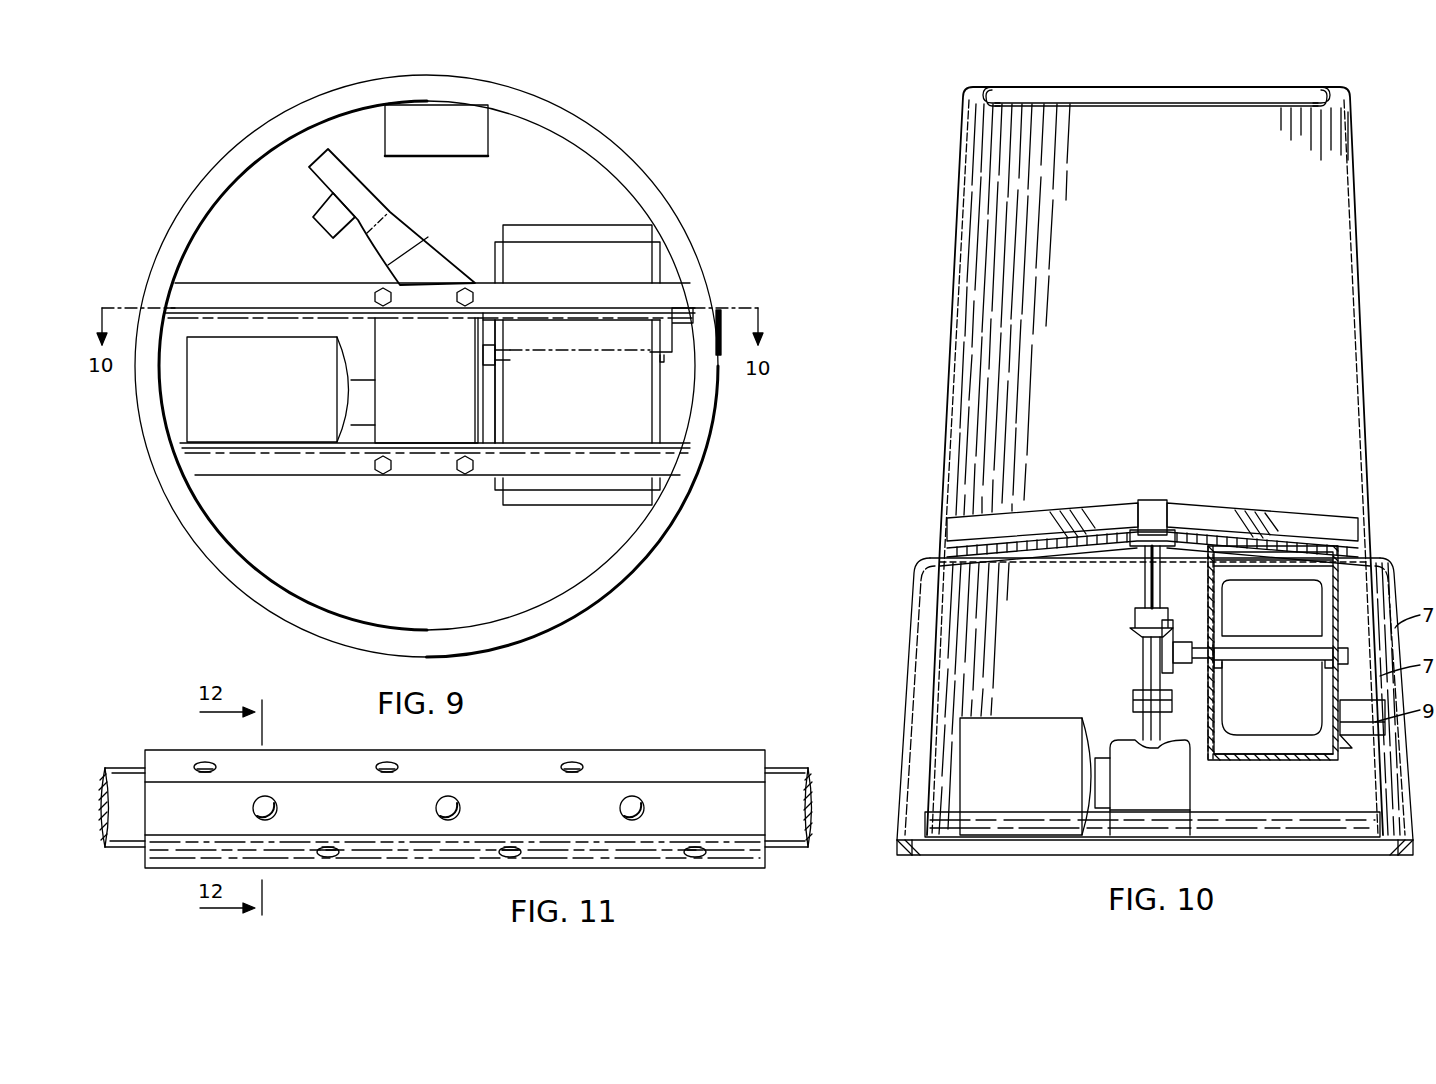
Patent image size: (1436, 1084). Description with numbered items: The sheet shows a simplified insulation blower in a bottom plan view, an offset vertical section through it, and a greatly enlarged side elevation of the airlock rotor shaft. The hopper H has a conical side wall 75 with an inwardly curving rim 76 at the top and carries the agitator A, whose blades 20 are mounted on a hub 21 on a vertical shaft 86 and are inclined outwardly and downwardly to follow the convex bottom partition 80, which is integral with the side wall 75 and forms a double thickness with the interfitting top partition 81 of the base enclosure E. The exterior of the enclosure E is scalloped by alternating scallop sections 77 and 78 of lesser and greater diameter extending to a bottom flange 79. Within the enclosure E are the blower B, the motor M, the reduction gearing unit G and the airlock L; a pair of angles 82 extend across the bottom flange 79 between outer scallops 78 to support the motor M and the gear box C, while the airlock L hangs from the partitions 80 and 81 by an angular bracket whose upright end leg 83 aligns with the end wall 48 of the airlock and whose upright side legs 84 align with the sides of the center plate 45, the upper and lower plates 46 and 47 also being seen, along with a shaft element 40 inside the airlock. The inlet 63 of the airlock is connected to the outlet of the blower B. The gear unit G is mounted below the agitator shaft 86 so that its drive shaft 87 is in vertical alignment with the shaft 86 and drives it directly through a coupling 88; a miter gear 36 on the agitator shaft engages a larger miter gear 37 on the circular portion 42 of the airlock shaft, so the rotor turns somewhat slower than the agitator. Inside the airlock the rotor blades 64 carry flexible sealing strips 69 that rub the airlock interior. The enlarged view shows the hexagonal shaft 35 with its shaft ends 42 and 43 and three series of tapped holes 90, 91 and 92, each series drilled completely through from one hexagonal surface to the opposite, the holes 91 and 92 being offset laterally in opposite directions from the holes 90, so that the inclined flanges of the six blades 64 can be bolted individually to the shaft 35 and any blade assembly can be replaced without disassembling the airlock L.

In FIG. 9, the base enclosure E is at (610, 133).
In FIG. 10, the base enclosure E is at (1133, 699).
In FIG. 10, the hopper H is at (1148, 461).
In FIG. 9, the gear box C is at (490, 130).
In FIG. 9, the blower B is at (330, 195).
In FIG. 9, the motor M is at (281, 389).
In FIG. 10, the motor M is at (1035, 776).
In FIG. 9, the reduction gearing unit G is at (426, 380).
In FIG. 10, the reduction gearing unit G is at (1150, 787).
In FIG. 9, the airlock L is at (571, 378).
In FIG. 10, the airlock L is at (1320, 674).
In FIG. 10, the agitator A is at (1155, 516).
In FIG. 10, the blades 20 is at (1108, 505).
In FIG. 10, the hub 21 is at (1148, 500).
In FIG. 11, the hexagonal shaft 35 is at (735, 748).
In FIG. 10, the miter gear 36 is at (1132, 641).
In FIG. 10, the miter gear 37 is at (1198, 635).
In FIG. 9, the shaft 40 is at (490, 358).
In FIG. 11, the circular portion of airlock shaft 42 is at (130, 768).
In FIG. 10, the circular portion of airlock shaft 42 is at (1237, 655).
In FIG. 11, the shaft end 43 is at (780, 765).
In FIG. 9, the center plate 45 is at (598, 260).
In FIG. 10, the center plate 45 is at (1285, 768).
In FIG. 9, the plate 46 is at (543, 232).
In FIG. 9, the bracket 47 is at (658, 430).
In FIG. 10, the bracket 47 is at (1337, 592).
In FIG. 9, the end wall 48 is at (500, 430).
In FIG. 10, the end wall 48 is at (1205, 585).
In FIG. 10, the inlet 63 is at (1190, 735).
In FIG. 10, the blades 64 is at (1272, 698).
In FIG. 10, the flexible sealing strips 69 is at (1322, 608).
In FIG. 10, the conical side wall 75 is at (952, 305).
In FIG. 10, the inwardly curving rim 76 is at (1142, 100).
In FIG. 10, the scallop sections 77 is at (915, 622).
In FIG. 10, the scallop sections 78 is at (920, 590).
In FIG. 9, the bottom flange 79 is at (460, 633).
In FIG. 10, the bottom flange 79 is at (910, 832).
In FIG. 10, the convex bottom partition 80 is at (1262, 522).
In FIG. 9, the top partition 81 is at (322, 541).
In FIG. 10, the top partition 81 is at (1118, 548).
In FIG. 9, the angles 82 is at (302, 290).
In FIG. 10, the angles 82 is at (1152, 800).
In FIG. 10, the upright end leg 83 is at (1205, 557).
In FIG. 10, the upright side legs 84 is at (1245, 562).
In FIG. 10, the vertical shaft 86 is at (1143, 596).
In FIG. 10, the gear box drive shaft 87 is at (1142, 718).
In FIG. 10, the coupling 88 is at (1133, 691).
In FIG. 11, the holes 90 is at (268, 796).
In FIG. 11, the holes 91 is at (212, 760).
In FIG. 11, the holes 92 is at (330, 860).